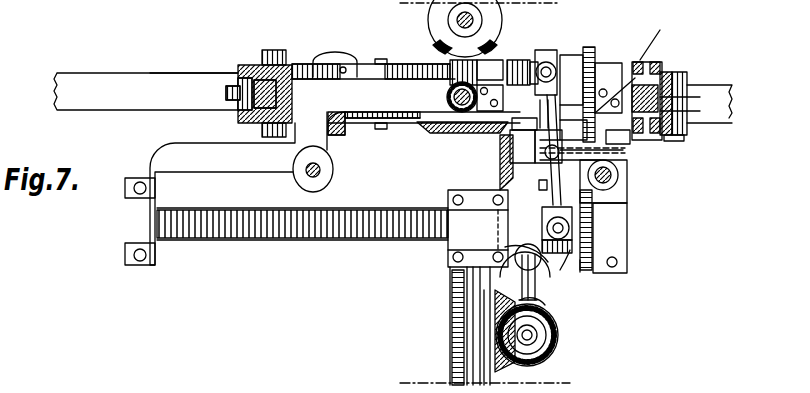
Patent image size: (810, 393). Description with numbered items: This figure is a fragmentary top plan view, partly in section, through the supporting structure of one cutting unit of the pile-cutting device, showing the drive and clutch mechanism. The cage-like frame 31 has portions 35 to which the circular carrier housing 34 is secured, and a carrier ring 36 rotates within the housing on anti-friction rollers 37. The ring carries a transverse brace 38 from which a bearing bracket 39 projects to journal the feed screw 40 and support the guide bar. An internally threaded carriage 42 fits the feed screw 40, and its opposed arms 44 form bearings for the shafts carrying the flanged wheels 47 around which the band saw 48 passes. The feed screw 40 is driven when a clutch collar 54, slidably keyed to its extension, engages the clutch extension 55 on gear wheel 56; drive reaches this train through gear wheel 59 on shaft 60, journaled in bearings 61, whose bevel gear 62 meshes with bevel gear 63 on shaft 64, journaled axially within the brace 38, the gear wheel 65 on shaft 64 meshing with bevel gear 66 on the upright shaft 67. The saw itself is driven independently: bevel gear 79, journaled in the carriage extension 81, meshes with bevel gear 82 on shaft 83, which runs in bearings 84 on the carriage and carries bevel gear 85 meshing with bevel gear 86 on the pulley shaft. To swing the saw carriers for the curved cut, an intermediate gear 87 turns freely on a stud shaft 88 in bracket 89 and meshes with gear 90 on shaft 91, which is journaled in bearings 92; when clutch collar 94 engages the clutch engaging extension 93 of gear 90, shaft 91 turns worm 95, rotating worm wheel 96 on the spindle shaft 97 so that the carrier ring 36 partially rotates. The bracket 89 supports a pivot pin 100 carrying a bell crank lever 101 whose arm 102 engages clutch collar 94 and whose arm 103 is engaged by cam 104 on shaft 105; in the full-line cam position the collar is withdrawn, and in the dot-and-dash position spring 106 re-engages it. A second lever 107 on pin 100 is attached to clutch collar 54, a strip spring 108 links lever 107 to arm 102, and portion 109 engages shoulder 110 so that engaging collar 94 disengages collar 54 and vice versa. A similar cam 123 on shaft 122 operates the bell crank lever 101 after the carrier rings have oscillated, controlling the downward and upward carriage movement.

The frame 31 is at (110, 110).
The carrier housing 34 is at (226, 97).
The portions of the cage 35 is at (173, 73).
The carrier ring 36 is at (252, 66).
The anti-friction rollers 37 is at (290, 40).
The transverse brace 38 is at (350, 83).
The bearing bracket 39 is at (128, 228).
The feed screw 40 is at (344, 242).
The carriage 42 is at (448, 244).
The opposed arms 44 is at (478, 366).
The flanged wheels 47 is at (452, 308).
The band saw 48 is at (454, 326).
The clutch collar 54 is at (554, 266).
The clutch extension 55 is at (582, 269).
The gear wheel 56 is at (592, 232).
The gear wheel 59 is at (626, 202).
The shaft 60 is at (542, 165).
The bearings 61 is at (500, 162).
The bevel gear 62 is at (500, 147).
The bevel gear 63 is at (440, 136).
The shaft 64 is at (450, 94).
The gear wheel 65 is at (438, 60).
The bevel gear 66 is at (437, 22).
The upright shaft 67 is at (476, 20).
The bevel gear 79 is at (490, 226).
The extension of the carriage 81 is at (470, 346).
The bevel gear 82 is at (522, 278).
The shaft 83 is at (536, 290).
The bearings 84 is at (508, 238).
The bevel gear 85 is at (558, 335).
The bevel gear 86 is at (502, 370).
The intermediate gear 87 is at (668, 64).
The stud shaft 88 is at (673, 124).
The bracket 89 is at (658, 143).
The gear 90 is at (606, 63).
The shaft 91 is at (618, 42).
The bearings 92 is at (665, 85).
The clutch engaging extension 93 is at (590, 52).
The clutch collar 94 is at (550, 52).
The worm 95 is at (412, 60).
The worm wheel 96 is at (427, 112).
The spindle shaft 97 is at (464, 137).
The pivot pin 100 is at (525, 140).
The bell crank lever 101 is at (592, 98).
The arm 102 is at (544, 109).
The arm 103 is at (622, 142).
The cam 104 is at (616, 176).
The shaft 105 is at (608, 183).
The spring 106 is at (519, 58).
The lever 107 is at (546, 201).
The strip spring 108 is at (548, 181).
The portion 109 is at (620, 154).
The shoulder 110 is at (560, 152).
The shaft 122 is at (306, 176).
The cam 123 is at (336, 175).